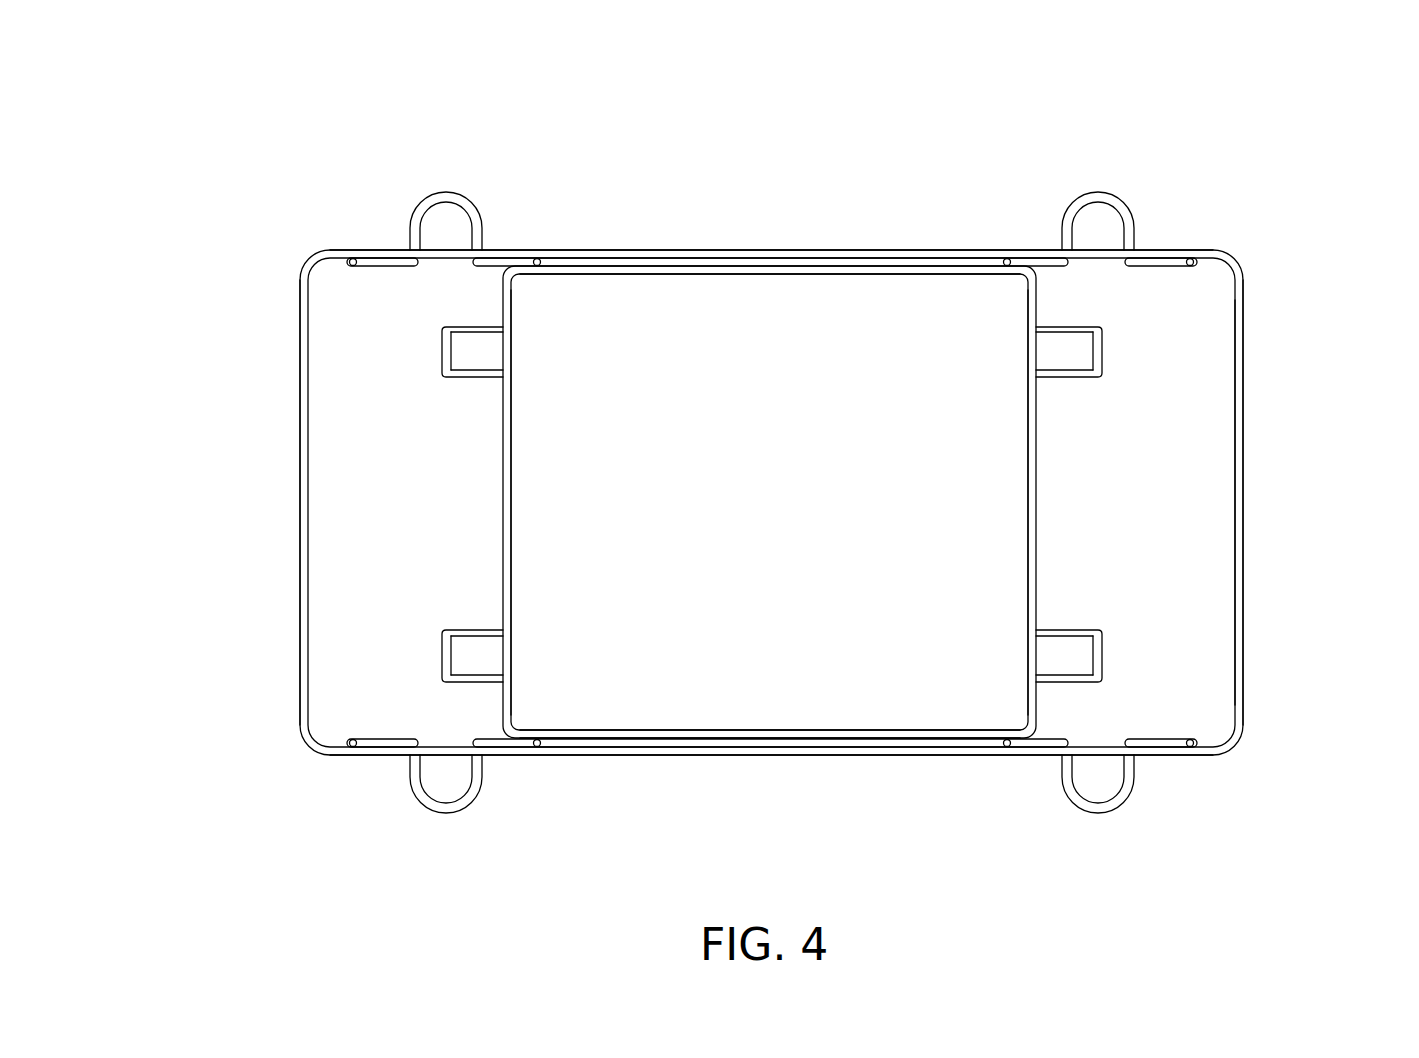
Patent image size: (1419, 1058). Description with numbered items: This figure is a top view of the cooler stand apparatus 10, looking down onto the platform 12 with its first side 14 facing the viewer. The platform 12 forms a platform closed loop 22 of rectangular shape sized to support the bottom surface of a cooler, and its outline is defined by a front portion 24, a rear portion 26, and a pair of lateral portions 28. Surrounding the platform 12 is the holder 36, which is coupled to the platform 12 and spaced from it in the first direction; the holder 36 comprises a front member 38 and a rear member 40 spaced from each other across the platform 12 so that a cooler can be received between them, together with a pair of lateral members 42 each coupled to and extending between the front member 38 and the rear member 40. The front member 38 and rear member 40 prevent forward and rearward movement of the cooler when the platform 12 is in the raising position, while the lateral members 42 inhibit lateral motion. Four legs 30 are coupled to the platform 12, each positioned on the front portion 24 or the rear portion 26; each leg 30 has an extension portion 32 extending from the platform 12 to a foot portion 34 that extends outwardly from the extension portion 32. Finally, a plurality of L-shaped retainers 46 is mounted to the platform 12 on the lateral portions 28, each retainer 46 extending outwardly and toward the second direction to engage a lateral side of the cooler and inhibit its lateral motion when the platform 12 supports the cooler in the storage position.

The cooler stand apparatus 10 is at (1222, 157).
The platform 12 is at (492, 495).
The first side 14 is at (512, 446).
The platform closed loop 22 is at (608, 705).
The front portion 24 is at (765, 730).
The rear portion 26 is at (762, 270).
The lateral portions 28 is at (508, 554).
The legs 30 is at (463, 190).
The extension portion 32 is at (478, 267).
The foot portion 34 is at (426, 200).
The holder 36 is at (1258, 400).
The front member 38 is at (810, 755).
The rear member 40 is at (755, 250).
The lateral members 42 is at (303, 467).
The retainers 46 is at (460, 377).